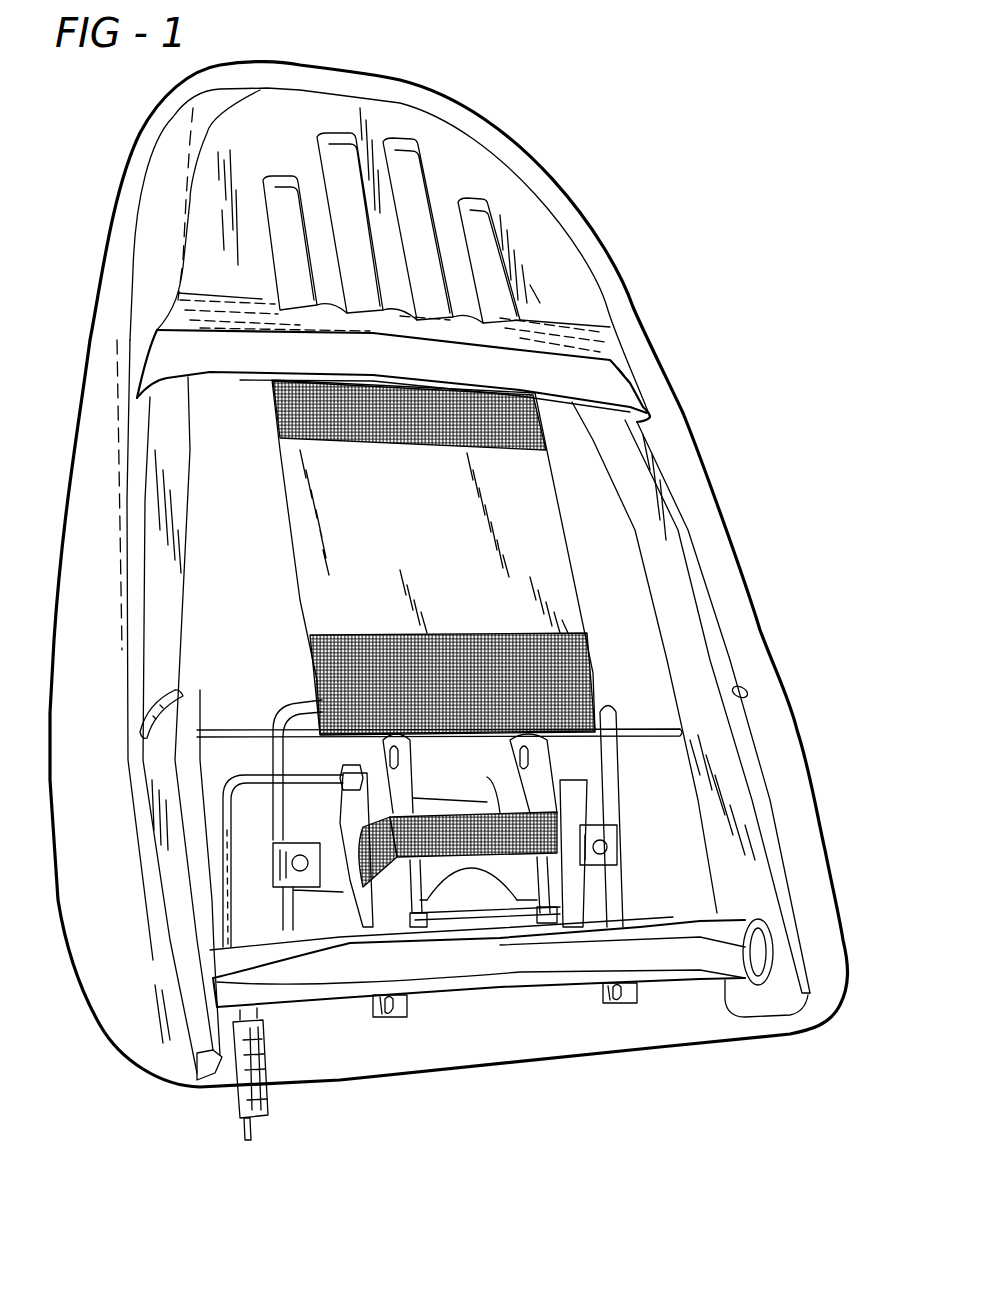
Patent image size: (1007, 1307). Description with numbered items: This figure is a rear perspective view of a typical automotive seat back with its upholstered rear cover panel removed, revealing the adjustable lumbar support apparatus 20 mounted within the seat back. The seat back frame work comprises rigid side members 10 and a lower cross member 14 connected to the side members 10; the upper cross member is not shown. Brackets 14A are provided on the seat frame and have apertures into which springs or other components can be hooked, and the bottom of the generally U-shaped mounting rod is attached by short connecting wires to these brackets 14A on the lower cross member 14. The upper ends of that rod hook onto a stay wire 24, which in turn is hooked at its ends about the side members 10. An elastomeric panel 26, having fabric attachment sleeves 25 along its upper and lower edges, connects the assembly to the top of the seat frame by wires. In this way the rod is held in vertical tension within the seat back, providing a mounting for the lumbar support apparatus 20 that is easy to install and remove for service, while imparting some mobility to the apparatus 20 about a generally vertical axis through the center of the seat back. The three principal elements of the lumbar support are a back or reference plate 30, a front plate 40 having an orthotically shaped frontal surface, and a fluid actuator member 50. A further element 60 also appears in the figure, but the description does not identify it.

The side members 10 is at (173, 595).
The lower cross member 14 is at (492, 968).
The brackets 14A is at (400, 1025).
The adjustable lumbar support apparatus 20 is at (630, 823).
The stay wire 24 is at (247, 744).
The fabric attachment sleeves 25 is at (318, 682).
The elastomeric panel 26 is at (563, 510).
The back or reference plate 30 is at (490, 900).
The front plate 40 is at (620, 762).
The fluid actuator member 50 is at (343, 800).
The mounting plate 60 is at (561, 826).